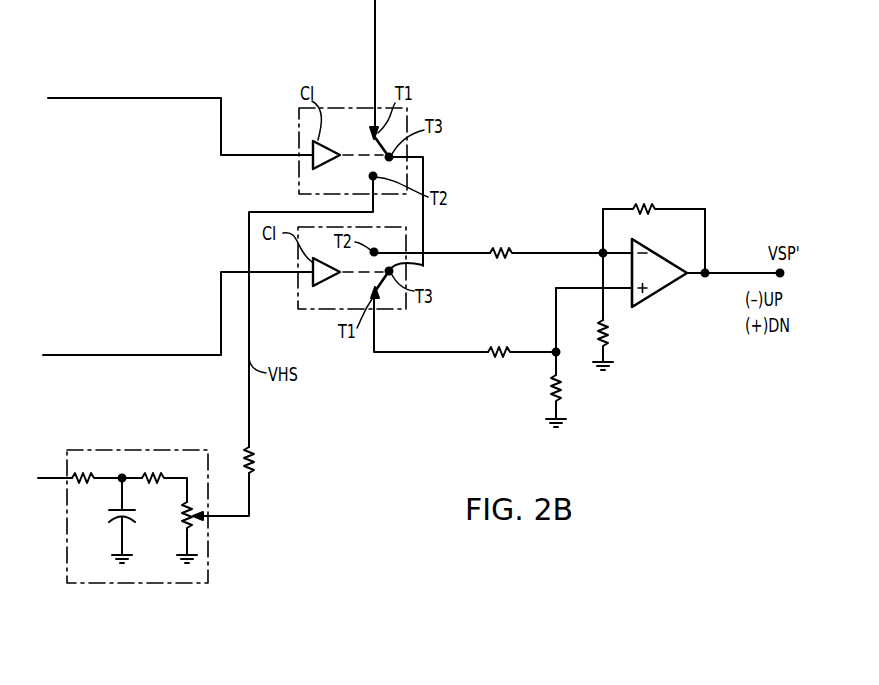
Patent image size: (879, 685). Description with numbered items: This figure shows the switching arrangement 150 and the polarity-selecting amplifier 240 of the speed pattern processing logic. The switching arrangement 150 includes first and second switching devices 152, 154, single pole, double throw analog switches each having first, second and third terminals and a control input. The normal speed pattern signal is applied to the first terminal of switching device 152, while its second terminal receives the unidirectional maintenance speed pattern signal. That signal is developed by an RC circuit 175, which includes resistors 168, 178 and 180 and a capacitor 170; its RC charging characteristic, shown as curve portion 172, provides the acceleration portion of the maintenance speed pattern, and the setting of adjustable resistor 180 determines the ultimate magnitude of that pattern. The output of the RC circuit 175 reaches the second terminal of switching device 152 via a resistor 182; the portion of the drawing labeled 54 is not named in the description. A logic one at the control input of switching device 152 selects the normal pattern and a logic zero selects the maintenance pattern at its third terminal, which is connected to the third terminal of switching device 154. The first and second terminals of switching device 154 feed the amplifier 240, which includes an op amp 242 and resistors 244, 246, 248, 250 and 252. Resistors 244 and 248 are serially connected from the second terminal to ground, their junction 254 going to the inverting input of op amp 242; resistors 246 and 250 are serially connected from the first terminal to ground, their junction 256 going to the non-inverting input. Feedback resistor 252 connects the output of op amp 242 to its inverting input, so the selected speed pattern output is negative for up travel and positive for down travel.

The velocity reference circuit 54 is at (315, 491).
The switching arrangement 150 is at (383, 309).
The first switching device 152 is at (372, 159).
The second switching device 154 is at (461, 281).
The resistor 168 is at (84, 472).
The capacitor 170 is at (112, 519).
The curve portion 172 is at (122, 474).
The RC circuit 175 is at (172, 583).
The resistor 178 is at (153, 473).
The adjustable resistor 180 is at (184, 523).
The resistor 182 is at (253, 458).
The amplifier 240 is at (756, 195).
The op amp 242 is at (657, 291).
The resistor 244 is at (505, 246).
The resistor 246 is at (498, 348).
The resistor 248 is at (608, 336).
The resistor 250 is at (552, 389).
The feedback resistor 252 is at (640, 208).
The junction 254 is at (601, 250).
The junction 256 is at (558, 350).